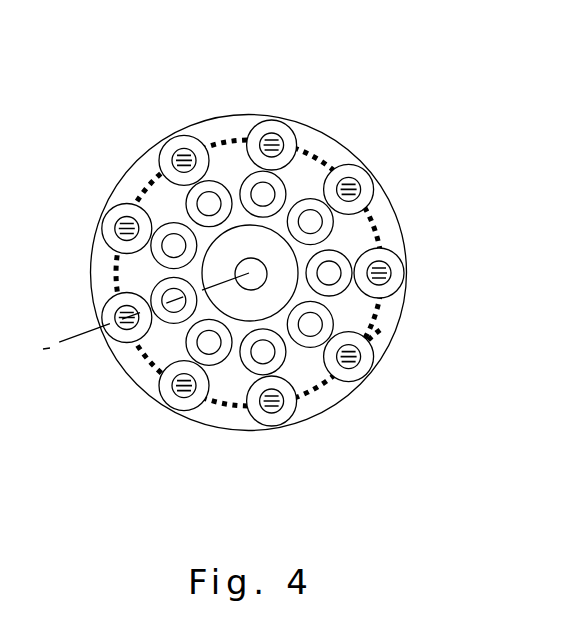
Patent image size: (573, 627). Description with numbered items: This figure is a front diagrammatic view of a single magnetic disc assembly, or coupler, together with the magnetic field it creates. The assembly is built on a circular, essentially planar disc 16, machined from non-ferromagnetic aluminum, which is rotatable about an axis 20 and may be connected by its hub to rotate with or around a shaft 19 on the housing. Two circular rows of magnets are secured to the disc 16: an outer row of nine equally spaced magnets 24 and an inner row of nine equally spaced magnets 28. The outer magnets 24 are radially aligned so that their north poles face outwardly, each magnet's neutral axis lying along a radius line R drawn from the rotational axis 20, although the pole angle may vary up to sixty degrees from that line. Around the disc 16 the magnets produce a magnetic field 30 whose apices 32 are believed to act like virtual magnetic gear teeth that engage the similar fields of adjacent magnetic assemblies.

The disc 16 is at (397, 238).
The shaft 19 is at (250, 258).
The axis 20 is at (240, 270).
The magnets 24 is at (362, 162).
The magnets 28 is at (309, 198).
The magnetic field 30 is at (380, 207).
The apices 32 is at (391, 327).
The radius line R is at (135, 311).